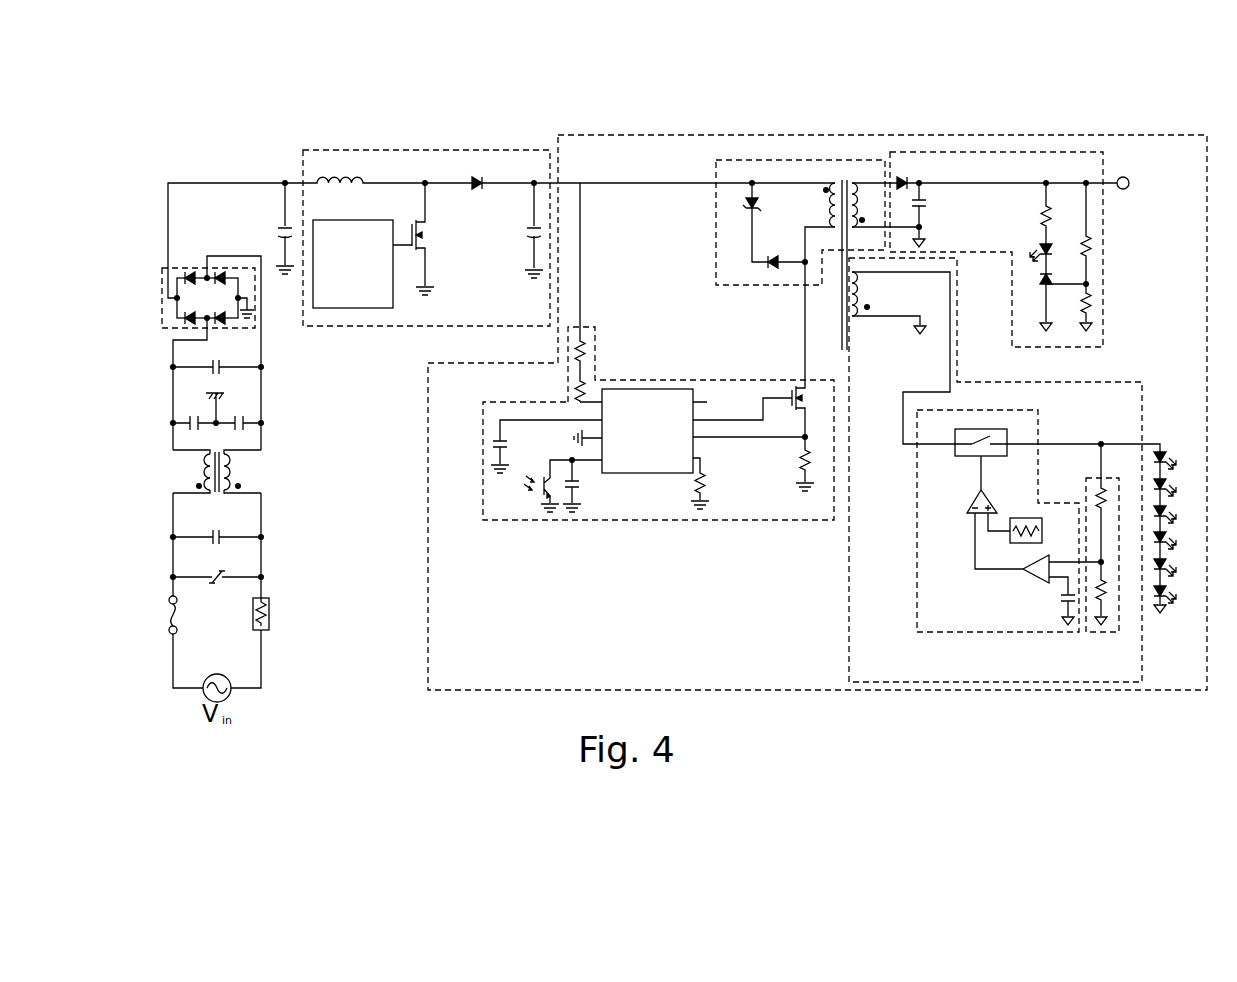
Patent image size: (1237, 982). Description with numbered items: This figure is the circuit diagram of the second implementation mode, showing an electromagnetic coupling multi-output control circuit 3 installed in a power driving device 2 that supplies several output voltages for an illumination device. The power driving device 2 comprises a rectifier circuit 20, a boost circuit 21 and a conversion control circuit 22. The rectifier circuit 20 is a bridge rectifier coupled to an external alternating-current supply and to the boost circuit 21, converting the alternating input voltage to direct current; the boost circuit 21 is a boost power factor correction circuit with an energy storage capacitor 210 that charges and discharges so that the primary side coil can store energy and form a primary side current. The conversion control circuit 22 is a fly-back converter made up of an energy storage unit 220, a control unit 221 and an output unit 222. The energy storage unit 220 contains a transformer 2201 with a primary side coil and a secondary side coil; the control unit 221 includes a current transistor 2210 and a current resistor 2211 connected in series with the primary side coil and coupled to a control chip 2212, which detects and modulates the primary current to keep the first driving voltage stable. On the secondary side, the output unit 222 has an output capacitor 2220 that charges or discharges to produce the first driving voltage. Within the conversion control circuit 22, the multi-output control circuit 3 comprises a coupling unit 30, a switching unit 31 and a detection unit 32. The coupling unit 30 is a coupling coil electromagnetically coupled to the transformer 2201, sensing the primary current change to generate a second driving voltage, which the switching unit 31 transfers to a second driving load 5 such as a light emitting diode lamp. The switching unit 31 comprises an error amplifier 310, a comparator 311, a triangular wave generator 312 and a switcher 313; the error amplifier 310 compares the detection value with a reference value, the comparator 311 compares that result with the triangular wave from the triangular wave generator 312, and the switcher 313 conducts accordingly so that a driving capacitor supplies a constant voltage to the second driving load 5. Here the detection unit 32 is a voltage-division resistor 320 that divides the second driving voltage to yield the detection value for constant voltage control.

The power driving device 2 is at (170, 103).
The rectifier circuit 20 is at (162, 300).
The boost circuit 21 is at (398, 150).
The energy storage capacitor 210 is at (545, 222).
The conversion control circuit 22 is at (643, 135).
The transformer 2201 is at (848, 181).
The energy storage unit 220 is at (734, 285).
The current transistor 2210 is at (802, 384).
The current resistor 2211 is at (800, 468).
The control chip 2212 is at (629, 473).
The control unit 221 is at (608, 522).
The output unit 222 is at (989, 253).
The output capacitor 2220 is at (925, 212).
The coupling unit 30 is at (856, 317).
The electromagnetic coupling multi-output control circuit 3 is at (1132, 382).
The switching unit 31 is at (1014, 632).
The detection unit 32 is at (1100, 632).
The error amplifier 310 is at (1023, 572).
The comparator 311 is at (970, 513).
The triangular wave generator 312 is at (1024, 518).
The switcher 313 is at (960, 456).
The voltage-division resistor 320 is at (1108, 598).
The second driving load 5 is at (1166, 452).